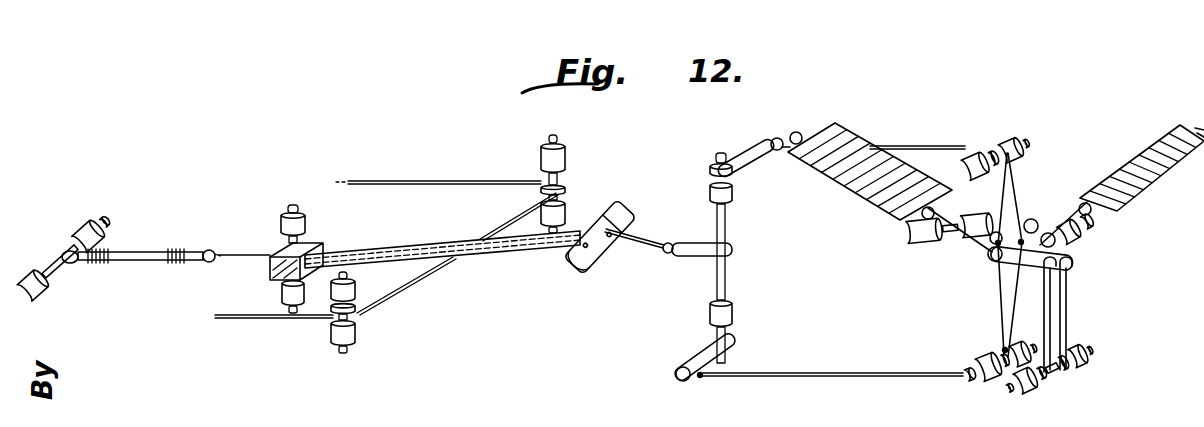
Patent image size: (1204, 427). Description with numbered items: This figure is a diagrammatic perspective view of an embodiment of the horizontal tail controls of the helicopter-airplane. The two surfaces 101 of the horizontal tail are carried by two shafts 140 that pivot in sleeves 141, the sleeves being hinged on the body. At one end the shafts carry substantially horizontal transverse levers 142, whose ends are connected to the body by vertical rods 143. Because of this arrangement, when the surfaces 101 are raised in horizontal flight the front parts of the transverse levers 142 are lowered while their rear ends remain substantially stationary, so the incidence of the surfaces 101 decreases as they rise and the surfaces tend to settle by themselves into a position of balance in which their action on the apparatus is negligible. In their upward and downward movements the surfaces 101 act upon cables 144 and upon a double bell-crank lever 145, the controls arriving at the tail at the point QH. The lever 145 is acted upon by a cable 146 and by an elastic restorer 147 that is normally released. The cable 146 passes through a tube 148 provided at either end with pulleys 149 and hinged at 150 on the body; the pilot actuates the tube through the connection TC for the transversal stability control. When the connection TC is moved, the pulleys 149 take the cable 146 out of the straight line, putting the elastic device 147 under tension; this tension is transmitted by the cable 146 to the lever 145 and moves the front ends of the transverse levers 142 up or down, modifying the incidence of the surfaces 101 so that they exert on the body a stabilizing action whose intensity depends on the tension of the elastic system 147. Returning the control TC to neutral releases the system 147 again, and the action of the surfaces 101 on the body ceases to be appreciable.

The surfaces of the horizontal tail 101 is at (993, 175).
The shafts 140 is at (993, 118).
The sleeves 141 is at (1071, 245).
The transverse levers 142 is at (975, 255).
The vertical rods 143 is at (1099, 314).
The cables 144 is at (900, 256).
The double bell-crank lever 145 is at (710, 259).
The cable 146 is at (666, 263).
The elastic restorer 147 is at (143, 255).
The tube 148 is at (442, 254).
The pulleys 149 is at (424, 244).
The hinge of the tube on the body 150 is at (323, 251).
The transversal stability constant control connection TC is at (390, 244).
The point of arrival of the horizontal tail controls QH is at (1015, 162).